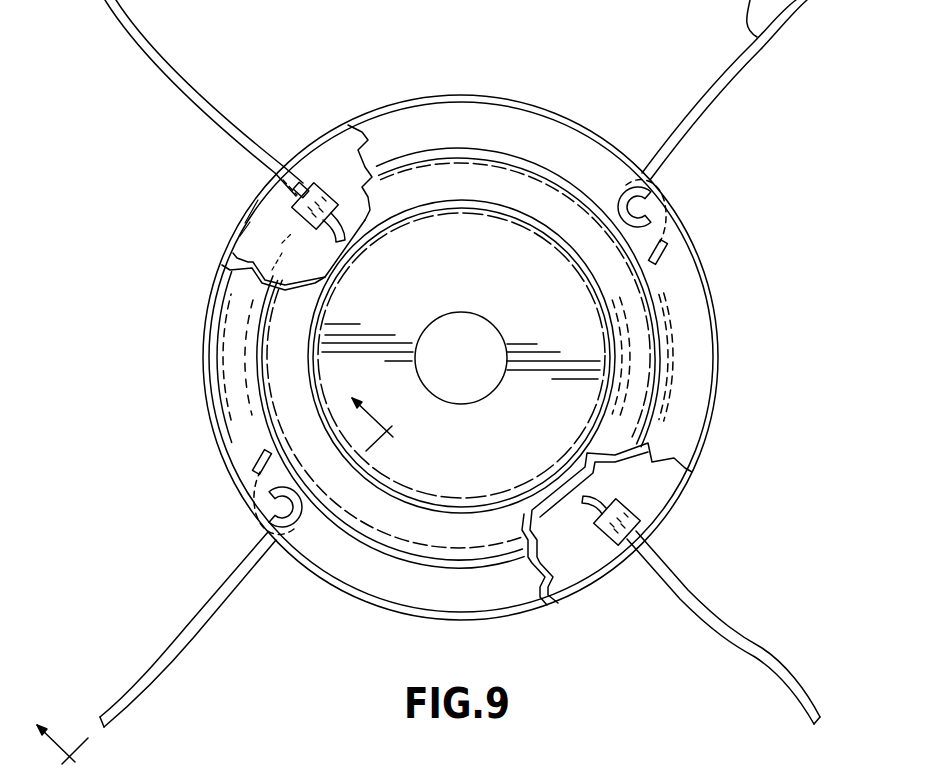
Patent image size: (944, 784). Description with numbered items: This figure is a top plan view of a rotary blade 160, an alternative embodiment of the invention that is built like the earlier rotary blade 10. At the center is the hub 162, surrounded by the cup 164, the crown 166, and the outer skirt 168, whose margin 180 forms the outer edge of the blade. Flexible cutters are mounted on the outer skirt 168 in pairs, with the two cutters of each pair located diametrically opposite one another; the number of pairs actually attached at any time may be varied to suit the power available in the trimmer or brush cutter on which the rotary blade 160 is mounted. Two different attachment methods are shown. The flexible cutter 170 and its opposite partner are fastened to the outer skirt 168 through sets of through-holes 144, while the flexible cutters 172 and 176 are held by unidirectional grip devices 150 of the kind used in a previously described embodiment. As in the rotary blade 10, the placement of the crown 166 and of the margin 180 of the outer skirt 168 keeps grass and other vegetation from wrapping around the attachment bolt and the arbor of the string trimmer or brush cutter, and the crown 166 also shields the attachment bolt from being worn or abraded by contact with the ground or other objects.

The rotary blade 10 is at (229, 591).
The through-holes 144 is at (258, 497).
The unidirectional grip devices 150 is at (328, 183).
The rotary blade 160 is at (600, 108).
The hub 162 is at (434, 287).
The cup 164 is at (282, 361).
The crown 166 is at (360, 545).
The outer skirt 168 is at (412, 598).
The flexible cutter 170 is at (190, 630).
The flexible cutter 172 is at (178, 68).
The flexible cutter 176 is at (766, 648).
The margin 180 is at (495, 620).